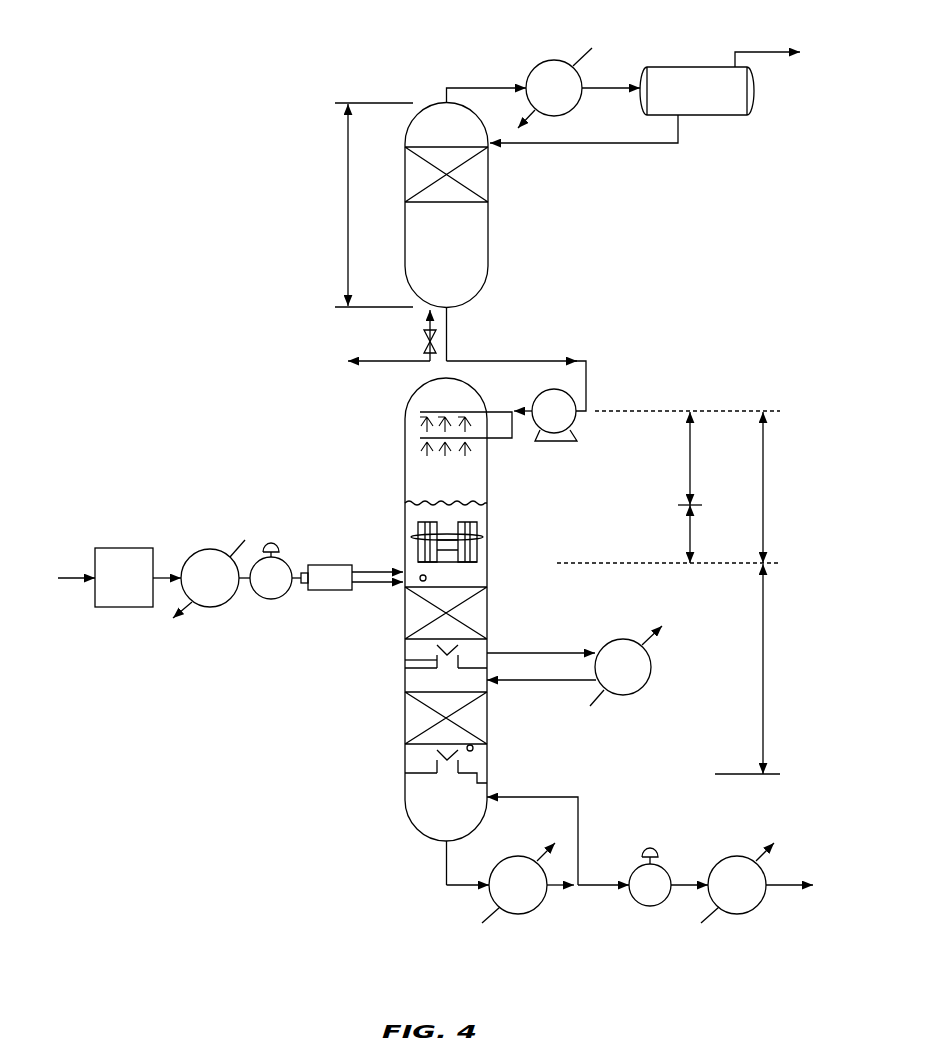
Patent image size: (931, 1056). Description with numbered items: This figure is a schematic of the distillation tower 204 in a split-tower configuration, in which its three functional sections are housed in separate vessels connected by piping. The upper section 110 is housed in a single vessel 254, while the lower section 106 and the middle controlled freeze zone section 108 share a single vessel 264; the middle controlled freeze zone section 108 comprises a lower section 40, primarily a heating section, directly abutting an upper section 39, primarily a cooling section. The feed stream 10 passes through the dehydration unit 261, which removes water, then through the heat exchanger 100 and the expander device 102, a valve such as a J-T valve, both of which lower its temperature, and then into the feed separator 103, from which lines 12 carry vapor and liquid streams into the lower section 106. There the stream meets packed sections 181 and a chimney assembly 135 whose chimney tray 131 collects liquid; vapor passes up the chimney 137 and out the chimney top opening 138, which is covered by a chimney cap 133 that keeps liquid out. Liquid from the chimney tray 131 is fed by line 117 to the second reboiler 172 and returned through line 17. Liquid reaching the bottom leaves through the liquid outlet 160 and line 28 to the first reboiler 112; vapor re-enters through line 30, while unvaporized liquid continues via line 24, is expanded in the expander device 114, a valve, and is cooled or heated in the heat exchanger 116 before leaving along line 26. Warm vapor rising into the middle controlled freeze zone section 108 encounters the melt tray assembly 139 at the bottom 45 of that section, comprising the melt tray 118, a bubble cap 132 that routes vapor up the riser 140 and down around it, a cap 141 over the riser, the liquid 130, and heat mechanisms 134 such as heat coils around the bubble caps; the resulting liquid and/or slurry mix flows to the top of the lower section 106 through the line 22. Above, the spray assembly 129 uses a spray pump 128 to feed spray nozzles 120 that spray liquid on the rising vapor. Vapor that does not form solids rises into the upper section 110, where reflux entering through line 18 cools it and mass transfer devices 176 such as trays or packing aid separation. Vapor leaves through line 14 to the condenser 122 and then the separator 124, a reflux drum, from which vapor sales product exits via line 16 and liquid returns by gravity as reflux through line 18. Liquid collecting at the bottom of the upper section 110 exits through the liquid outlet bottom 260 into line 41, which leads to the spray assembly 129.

The distillation tower 204 is at (223, 68).
The vessel 254 is at (492, 243).
The mass transfer device 176 is at (422, 147).
The upper section 110 is at (346, 200).
The line 14 is at (480, 87).
The condenser 122 is at (556, 60).
The separator 124 is at (672, 67).
The line 16 is at (752, 52).
The line 18 is at (632, 144).
The liquid outlet bottom 260 is at (447, 312).
The line 41 is at (528, 360).
The spray pump 128 is at (577, 427).
The spray assembly 129 is at (510, 402).
The spray nozzle 120 is at (420, 437).
The upper section 39 is at (692, 451).
The lower section 40 is at (692, 531).
The middle controlled freeze zone section 108 is at (765, 479).
The lower section 106 is at (765, 661).
The cap 141 is at (420, 505).
The melt tray assembly 139 is at (481, 504).
The heat mechanism 134 is at (418, 538).
The bubble cap 132 is at (477, 523).
The liquid 130 is at (489, 536).
The riser 140 is at (487, 552).
The melt tray 118 is at (477, 563).
The bottom 45 is at (450, 563).
The line 22 is at (402, 570).
The packed section 181 is at (423, 580).
The chimney assembly 135 is at (372, 672).
The chimney 137 is at (405, 660).
The chimney top opening 138 is at (430, 652).
The chimney cap 133 is at (462, 645).
The chimney tray 131 is at (415, 670).
The line 117 is at (542, 652).
The line 17 is at (560, 681).
The second reboiler 172 is at (640, 639).
The vessel 264 is at (491, 759).
The line 30 is at (548, 797).
The liquid outlet 160 is at (440, 843).
The line 28 is at (455, 887).
The first reboiler 112 is at (528, 857).
The line 24 is at (590, 884).
The expander device 114 is at (661, 904).
The heat exchanger 116 is at (748, 857).
The product outlet line 26 is at (778, 884).
The feed stream 10 is at (68, 576).
The dehydration unit 261 is at (130, 548).
The heat exchanger 100 is at (215, 549).
The expander device 102 is at (268, 598).
The feed separator 103 is at (305, 591).
The line 12 is at (330, 565).